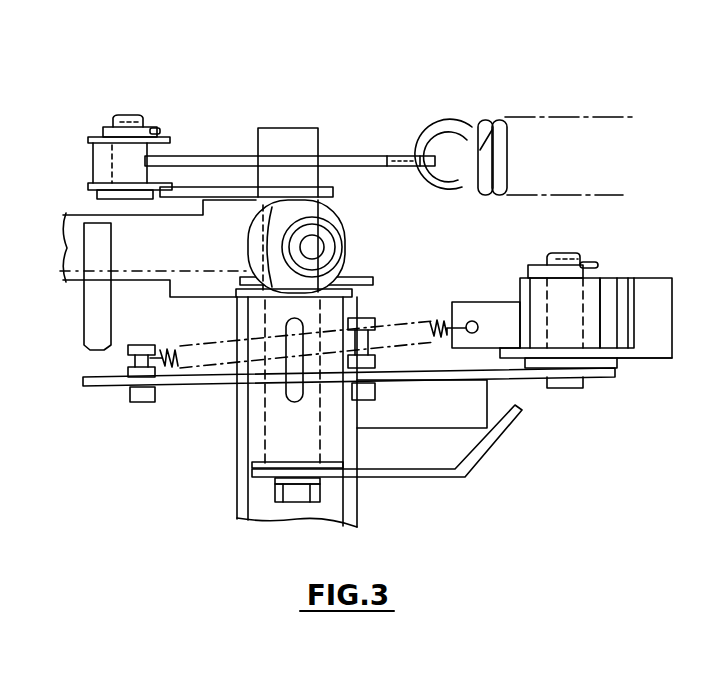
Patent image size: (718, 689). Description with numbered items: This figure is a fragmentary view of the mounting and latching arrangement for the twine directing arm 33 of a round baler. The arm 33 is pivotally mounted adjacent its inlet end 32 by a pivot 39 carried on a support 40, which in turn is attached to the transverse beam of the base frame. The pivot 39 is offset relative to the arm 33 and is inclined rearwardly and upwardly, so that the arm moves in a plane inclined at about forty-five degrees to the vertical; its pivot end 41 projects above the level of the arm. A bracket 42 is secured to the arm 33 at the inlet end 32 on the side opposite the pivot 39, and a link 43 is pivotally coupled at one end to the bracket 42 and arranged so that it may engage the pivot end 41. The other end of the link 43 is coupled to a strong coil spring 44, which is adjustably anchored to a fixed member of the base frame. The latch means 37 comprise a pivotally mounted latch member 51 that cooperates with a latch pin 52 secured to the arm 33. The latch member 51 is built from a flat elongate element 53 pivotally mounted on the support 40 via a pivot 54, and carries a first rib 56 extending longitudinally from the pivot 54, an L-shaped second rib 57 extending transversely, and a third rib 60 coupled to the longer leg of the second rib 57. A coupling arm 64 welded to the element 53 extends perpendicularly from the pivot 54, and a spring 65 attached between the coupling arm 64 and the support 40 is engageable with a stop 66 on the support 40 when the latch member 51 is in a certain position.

The inlet end 32 is at (343, 245).
The twine directing arm 33 is at (149, 281).
The latch means 37 is at (655, 262).
The pivot 39 is at (262, 428).
The support 40 is at (527, 380).
The pivot end 41 is at (318, 143).
The bracket 42 is at (158, 199).
The link 43 is at (200, 157).
The coil spring 44 is at (540, 116).
The latch member 51 is at (660, 360).
The latch pin 52 is at (83, 330).
The flat element 53 is at (640, 360).
The pivot 54 is at (577, 388).
The first rib 56 is at (613, 278).
The second rib 57 is at (628, 278).
The third rib 60 is at (667, 278).
The coupling arm 64 is at (478, 302).
The spring 65 is at (420, 323).
The stop 66 is at (372, 313).